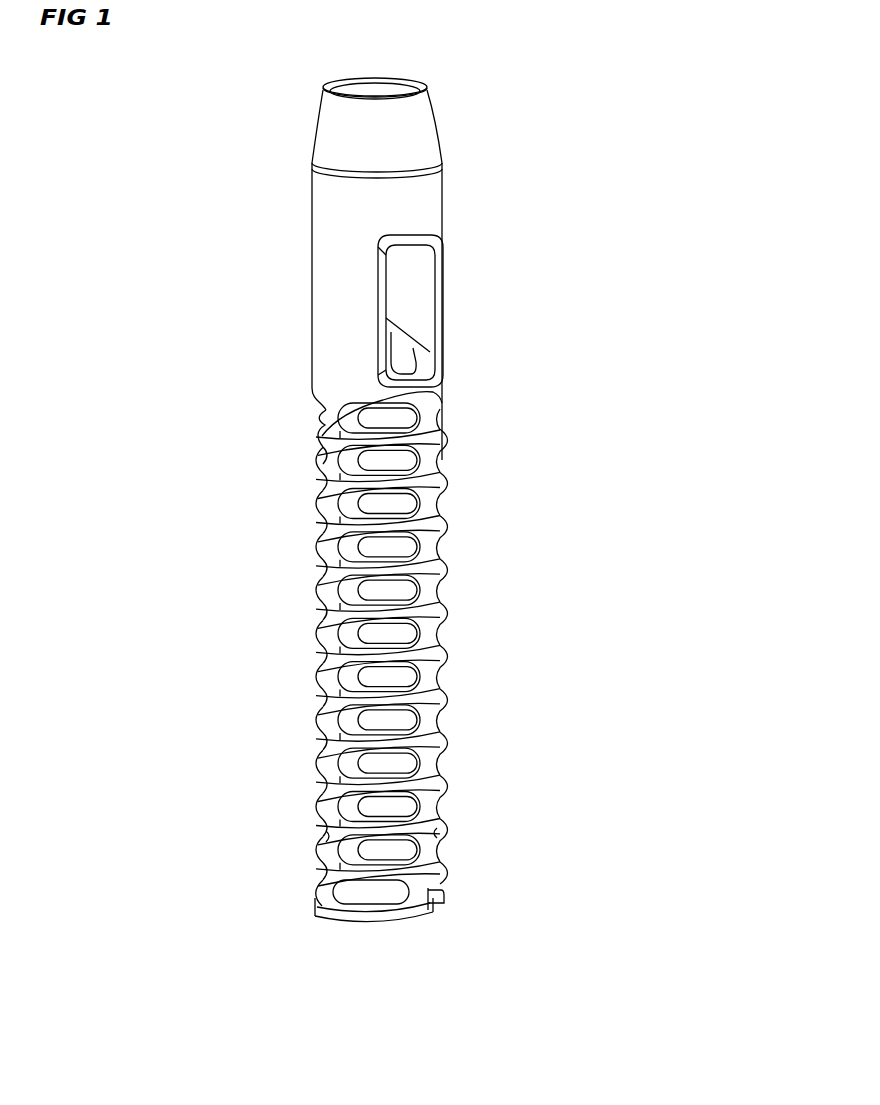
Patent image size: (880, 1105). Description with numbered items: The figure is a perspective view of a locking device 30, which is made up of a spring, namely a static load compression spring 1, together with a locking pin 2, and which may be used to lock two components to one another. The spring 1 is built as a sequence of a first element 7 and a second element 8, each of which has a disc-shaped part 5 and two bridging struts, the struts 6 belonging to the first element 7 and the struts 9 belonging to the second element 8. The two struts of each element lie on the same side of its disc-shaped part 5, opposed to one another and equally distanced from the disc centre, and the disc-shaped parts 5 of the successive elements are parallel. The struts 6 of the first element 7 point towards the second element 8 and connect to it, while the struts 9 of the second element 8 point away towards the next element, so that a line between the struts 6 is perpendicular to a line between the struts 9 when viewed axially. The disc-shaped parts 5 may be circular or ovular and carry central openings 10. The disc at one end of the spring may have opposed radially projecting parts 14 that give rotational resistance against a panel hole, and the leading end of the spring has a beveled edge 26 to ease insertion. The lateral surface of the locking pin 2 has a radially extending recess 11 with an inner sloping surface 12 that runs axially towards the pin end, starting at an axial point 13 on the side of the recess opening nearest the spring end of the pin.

The static load compression spring 1 is at (432, 617).
The locking pin 2 is at (322, 258).
The disc-shaped part 5 is at (438, 827).
The struts 6 is at (317, 920).
The first element 7 is at (290, 898).
The second element 8 is at (290, 860).
The struts 9 is at (320, 845).
The openings 10 is at (377, 950).
The recess 11 is at (418, 327).
The inner sloping surface 12 is at (413, 370).
The axial point 13 is at (427, 390).
The radially projecting parts 14 is at (436, 908).
The beveled edge 26 is at (428, 922).
The locking device 30 is at (594, 421).